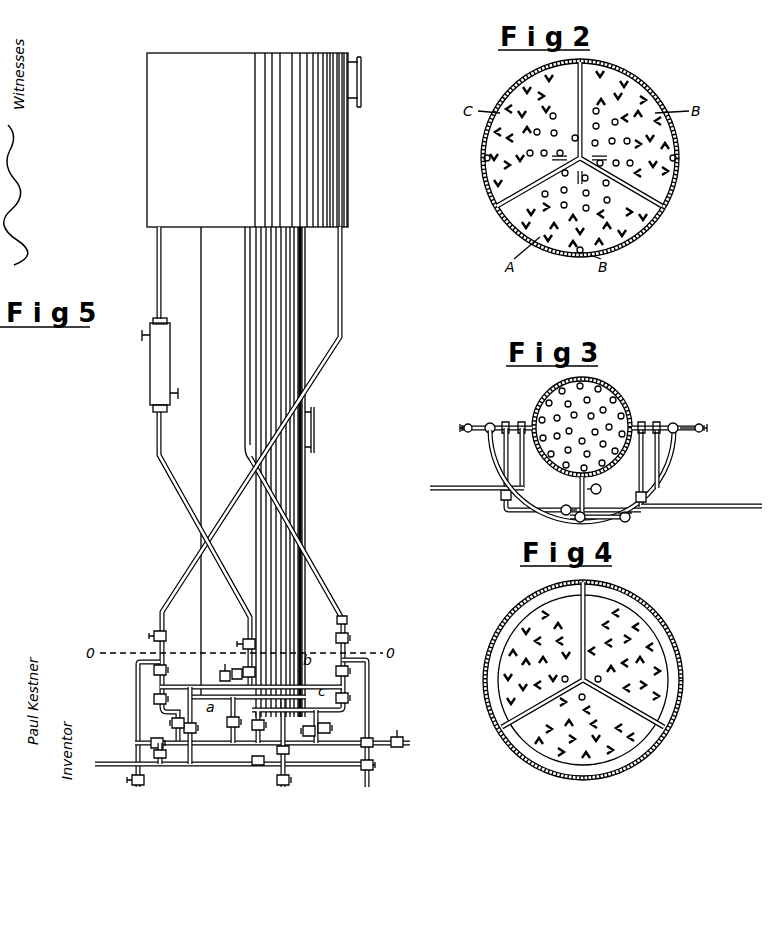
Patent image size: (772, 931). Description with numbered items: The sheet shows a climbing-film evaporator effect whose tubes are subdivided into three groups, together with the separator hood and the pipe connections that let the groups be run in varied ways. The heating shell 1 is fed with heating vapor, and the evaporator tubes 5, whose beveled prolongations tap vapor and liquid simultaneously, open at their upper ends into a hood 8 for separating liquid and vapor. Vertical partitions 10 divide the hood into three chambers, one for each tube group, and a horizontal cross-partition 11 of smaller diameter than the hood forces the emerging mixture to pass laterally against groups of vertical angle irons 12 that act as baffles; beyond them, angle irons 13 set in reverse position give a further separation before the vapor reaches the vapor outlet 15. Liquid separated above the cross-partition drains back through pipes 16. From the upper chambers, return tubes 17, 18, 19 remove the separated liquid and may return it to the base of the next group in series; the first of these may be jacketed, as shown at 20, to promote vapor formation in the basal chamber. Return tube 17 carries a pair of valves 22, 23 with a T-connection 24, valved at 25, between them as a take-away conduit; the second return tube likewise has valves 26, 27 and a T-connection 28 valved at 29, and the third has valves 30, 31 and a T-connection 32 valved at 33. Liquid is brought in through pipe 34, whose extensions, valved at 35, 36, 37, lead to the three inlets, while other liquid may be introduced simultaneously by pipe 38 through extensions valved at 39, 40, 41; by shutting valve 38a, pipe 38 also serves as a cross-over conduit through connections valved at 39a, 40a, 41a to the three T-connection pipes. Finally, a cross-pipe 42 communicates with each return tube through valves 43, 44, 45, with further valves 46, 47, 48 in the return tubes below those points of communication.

In FIG. 5, the heating shell 1 is at (291, 478).
In FIG. 3, the heating shell 1 is at (606, 386).
In FIG. 2, the tubes 5 is at (560, 190).
In FIG. 3, the tubes 5 is at (633, 418).
In FIG. 5, the hood 8 is at (345, 163).
In FIG. 2, the hood 8 is at (680, 143).
In FIG. 4, the hood 8 is at (668, 624).
In FIG. 2, the vertical partitions 10 is at (584, 72).
In FIG. 4, the vertical partitions 10 is at (587, 593).
In FIG. 4, the horizontal cross-partition 11 is at (635, 740).
In FIG. 2, the vertical angle irons 12 is at (612, 110).
In FIG. 4, the angle irons 13 is at (527, 648).
In FIG. 5, the vapor outlet 15 is at (362, 83).
In FIG. 2, the pipes 16 is at (584, 176).
In FIG. 4, the pipes 16 is at (565, 676).
In FIG. 5, the return tube 17 is at (155, 271).
In FIG. 2, the return tube 17 is at (484, 160).
In FIG. 3, the return tube 17 is at (590, 521).
In FIG. 5, the return tube 18 is at (251, 318).
In FIG. 3, the return tube 18 is at (680, 436).
In FIG. 5, the return tube 19 is at (342, 330).
In FIG. 2, the return tube 19 is at (677, 158).
In FIG. 3, the return tube 19 is at (490, 423).
In FIG. 5, the jacket 20 is at (150, 373).
In FIG. 5, the valve 22 is at (256, 644).
In FIG. 5, the valve 23 is at (255, 673).
In FIG. 5, the T-connection 24 is at (268, 685).
In FIG. 3, the T-connection 24 is at (628, 521).
In FIG. 5, the valve 25 is at (290, 781).
In FIG. 3, the valve 25 is at (620, 514).
In FIG. 5, the valve 26 is at (349, 638).
In FIG. 5, the valve 27 is at (349, 670).
In FIG. 3, the valve 27 is at (676, 423).
In FIG. 5, the T-connection 28 is at (369, 680).
In FIG. 3, the T-connection 28 is at (690, 425).
In FIG. 5, the valve 29 is at (373, 770).
In FIG. 3, the valve 29 is at (708, 428).
In FIG. 5, the valve 30 is at (153, 637).
In FIG. 5, the valve 31 is at (167, 670).
In FIG. 3, the valve 31 is at (496, 425).
In FIG. 5, the T-connection 32 is at (137, 679).
In FIG. 3, the T-connection 32 is at (466, 424).
In FIG. 5, the valve 33 is at (131, 780).
In FIG. 3, the valve 33 is at (466, 433).
In FIG. 5, the liquid supply pipe 34 is at (104, 762).
In FIG. 3, the liquid supply pipe 34 is at (465, 490).
In FIG. 5, the valve 35 is at (193, 734).
In FIG. 5, the valve 36 is at (286, 750).
In FIG. 3, the valve 36 is at (600, 487).
In FIG. 5, the valve 37 is at (331, 728).
In FIG. 5, the pipe 38 is at (411, 743).
In FIG. 3, the pipe 38 is at (745, 509).
In FIG. 5, the valve 38a is at (395, 737).
In FIG. 5, the valve 39 is at (150, 740).
In FIG. 5, the valve 39a is at (162, 758).
In FIG. 5, the valve 40 is at (265, 727).
In FIG. 3, the valve 40 is at (565, 505).
In FIG. 5, the valve 40a is at (257, 765).
In FIG. 5, the valve 41 is at (312, 737).
In FIG. 5, the valve 41a is at (368, 746).
In FIG. 5, the cross-pipe 42 is at (220, 676).
In FIG. 5, the valve 43 is at (168, 698).
In FIG. 3, the valve 43 is at (505, 497).
In FIG. 5, the valve 44 is at (237, 668).
In FIG. 3, the valve 44 is at (575, 519).
In FIG. 5, the valve 45 is at (345, 622).
In FIG. 3, the valve 45 is at (650, 497).
In FIG. 5, the valve 46 is at (172, 722).
In FIG. 5, the valve 47 is at (226, 724).
In FIG. 5, the valve 48 is at (349, 700).